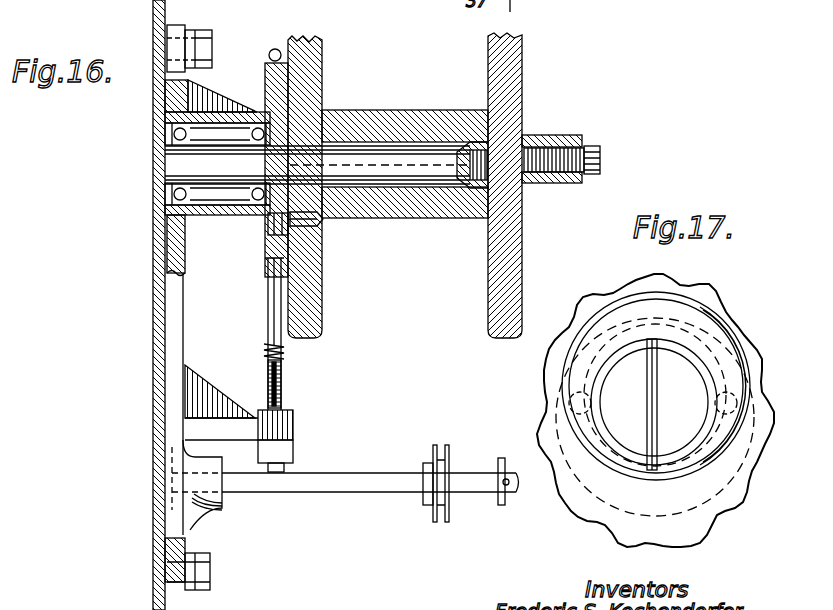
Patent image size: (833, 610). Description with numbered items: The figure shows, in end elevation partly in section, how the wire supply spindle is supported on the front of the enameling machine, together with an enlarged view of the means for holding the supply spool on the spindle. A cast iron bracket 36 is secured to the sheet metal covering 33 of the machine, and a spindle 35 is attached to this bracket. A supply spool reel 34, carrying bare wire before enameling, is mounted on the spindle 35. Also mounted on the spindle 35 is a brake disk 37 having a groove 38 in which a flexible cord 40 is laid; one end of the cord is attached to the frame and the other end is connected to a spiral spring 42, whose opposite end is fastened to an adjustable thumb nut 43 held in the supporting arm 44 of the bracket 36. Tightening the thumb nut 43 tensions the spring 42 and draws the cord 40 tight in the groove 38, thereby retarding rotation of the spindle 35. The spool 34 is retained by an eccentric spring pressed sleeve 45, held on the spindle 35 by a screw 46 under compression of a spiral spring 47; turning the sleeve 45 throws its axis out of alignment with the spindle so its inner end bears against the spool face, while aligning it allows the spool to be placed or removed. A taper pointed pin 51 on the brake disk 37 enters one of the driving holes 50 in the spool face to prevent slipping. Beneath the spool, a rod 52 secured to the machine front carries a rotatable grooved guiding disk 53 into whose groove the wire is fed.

In FIG. 16, the sheet metal covering 33 is at (154, 296).
In FIG. 16, the supply spool reel 34 is at (490, 302).
In FIG. 17, the supply spool reel 34 is at (604, 520).
In FIG. 16, the spindle 35 is at (380, 148).
In FIG. 17, the spindle 35 is at (608, 488).
In FIG. 16, the cast iron bracket 36 is at (258, 96).
In FIG. 16, the brake disk 37 is at (300, 40).
In FIG. 16, the groove 38 is at (266, 285).
In FIG. 16, the flexible cord 40 is at (268, 330).
In FIG. 16, the spiral spring 42 is at (284, 351).
In FIG. 16, the adjustable thumb nut 43 is at (283, 382).
In FIG. 16, the supporting arm 44 is at (294, 425).
In FIG. 16, the eccentric spring pressed sleeve 45 is at (565, 136).
In FIG. 17, the eccentric spring pressed sleeve 45 is at (672, 320).
In FIG. 16, the screw 46 is at (598, 150).
In FIG. 17, the screw 46 is at (640, 385).
In FIG. 16, the spiral spring 47 is at (566, 184).
In FIG. 17, the spiral spring 47 is at (620, 356).
In FIG. 16, the driving holes 50 is at (320, 222).
In FIG. 16, the taper pointed pin 51 is at (268, 230).
In FIG. 16, the rod 52 is at (470, 480).
In FIG. 16, the grooved guiding disk 53 is at (442, 470).